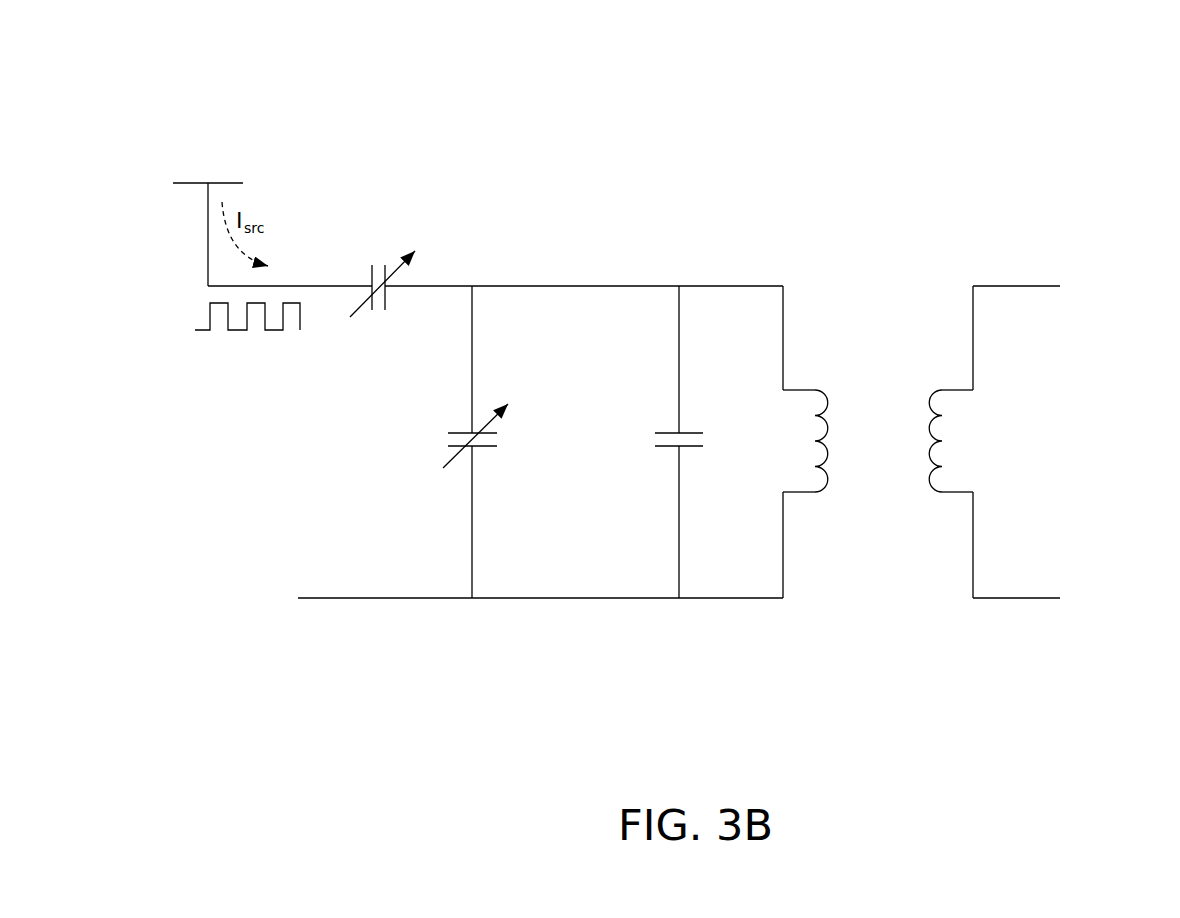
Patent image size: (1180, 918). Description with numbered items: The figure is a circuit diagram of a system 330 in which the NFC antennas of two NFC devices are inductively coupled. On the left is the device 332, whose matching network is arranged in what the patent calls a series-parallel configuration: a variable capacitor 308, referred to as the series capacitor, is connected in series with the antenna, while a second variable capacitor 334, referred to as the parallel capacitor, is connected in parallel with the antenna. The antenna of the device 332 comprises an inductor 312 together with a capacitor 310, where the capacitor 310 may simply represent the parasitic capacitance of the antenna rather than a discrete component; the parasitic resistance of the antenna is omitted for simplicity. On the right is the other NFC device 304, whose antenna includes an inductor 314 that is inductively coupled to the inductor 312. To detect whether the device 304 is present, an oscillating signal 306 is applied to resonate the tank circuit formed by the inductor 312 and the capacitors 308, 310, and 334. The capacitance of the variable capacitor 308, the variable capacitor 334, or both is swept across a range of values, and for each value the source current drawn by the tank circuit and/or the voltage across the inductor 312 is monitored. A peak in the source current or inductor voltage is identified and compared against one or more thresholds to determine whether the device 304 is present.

The NFC device 304 is at (1036, 176).
The oscillating signal 306 is at (195, 330).
The variable capacitor 308 is at (370, 281).
The capacitor 310 is at (665, 432).
The inductor 312 is at (800, 390).
The inductor 314 is at (962, 390).
The system 330 is at (819, 55).
The device 332 is at (594, 175).
The variable capacitor 334 is at (457, 432).